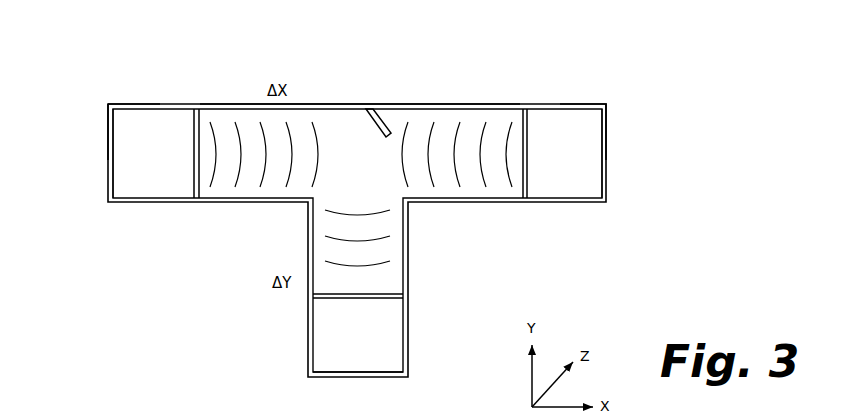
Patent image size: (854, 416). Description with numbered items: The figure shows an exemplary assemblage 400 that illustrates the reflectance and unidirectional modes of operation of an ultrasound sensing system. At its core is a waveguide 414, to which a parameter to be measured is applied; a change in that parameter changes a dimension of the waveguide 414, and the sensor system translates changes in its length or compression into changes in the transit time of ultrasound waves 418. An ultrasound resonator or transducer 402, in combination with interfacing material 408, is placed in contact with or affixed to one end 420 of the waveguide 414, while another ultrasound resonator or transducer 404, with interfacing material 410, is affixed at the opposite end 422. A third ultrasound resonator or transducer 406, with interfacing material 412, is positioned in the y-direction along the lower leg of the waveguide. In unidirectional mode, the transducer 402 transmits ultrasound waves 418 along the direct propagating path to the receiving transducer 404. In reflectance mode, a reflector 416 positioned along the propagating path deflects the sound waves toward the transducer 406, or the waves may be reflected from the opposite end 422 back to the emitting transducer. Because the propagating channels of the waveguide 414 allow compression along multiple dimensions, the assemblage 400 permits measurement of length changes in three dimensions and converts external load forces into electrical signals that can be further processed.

The assemblage 400 is at (648, 308).
The ultrasound resonator or transducer 402 is at (130, 155).
The ultrasound resonator or transducer 404 is at (594, 134).
The ultrasound resonator or transducer 406 is at (322, 333).
The interfacing material 408 is at (196, 206).
The interfacing material 410 is at (524, 206).
The interfacing material 412 is at (410, 298).
The waveguide 414 is at (333, 99).
The reflector 416 is at (383, 121).
The ultrasound waves 418 is at (252, 125).
The end of waveguide 420 is at (103, 101).
The opposite end of waveguide 422 is at (615, 92).